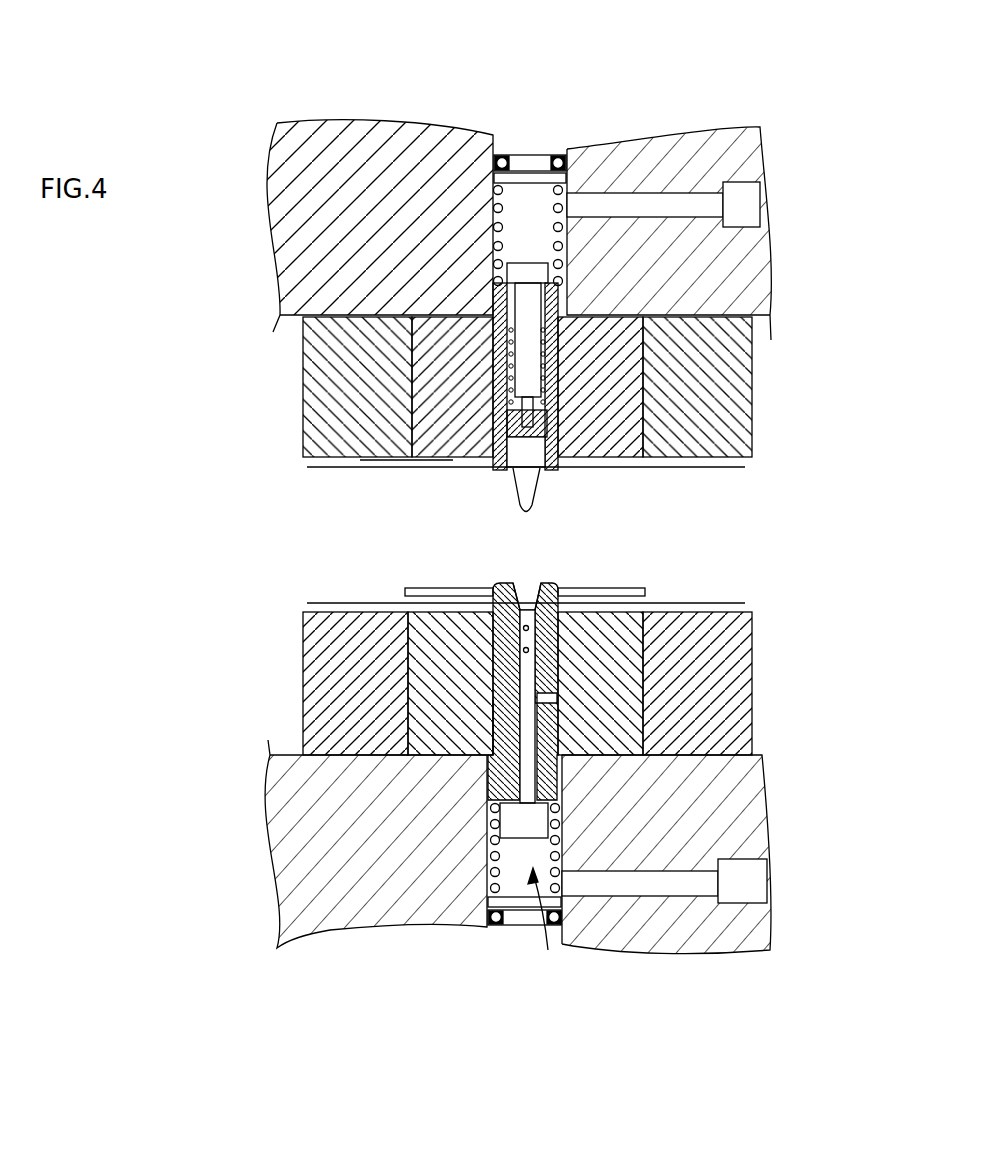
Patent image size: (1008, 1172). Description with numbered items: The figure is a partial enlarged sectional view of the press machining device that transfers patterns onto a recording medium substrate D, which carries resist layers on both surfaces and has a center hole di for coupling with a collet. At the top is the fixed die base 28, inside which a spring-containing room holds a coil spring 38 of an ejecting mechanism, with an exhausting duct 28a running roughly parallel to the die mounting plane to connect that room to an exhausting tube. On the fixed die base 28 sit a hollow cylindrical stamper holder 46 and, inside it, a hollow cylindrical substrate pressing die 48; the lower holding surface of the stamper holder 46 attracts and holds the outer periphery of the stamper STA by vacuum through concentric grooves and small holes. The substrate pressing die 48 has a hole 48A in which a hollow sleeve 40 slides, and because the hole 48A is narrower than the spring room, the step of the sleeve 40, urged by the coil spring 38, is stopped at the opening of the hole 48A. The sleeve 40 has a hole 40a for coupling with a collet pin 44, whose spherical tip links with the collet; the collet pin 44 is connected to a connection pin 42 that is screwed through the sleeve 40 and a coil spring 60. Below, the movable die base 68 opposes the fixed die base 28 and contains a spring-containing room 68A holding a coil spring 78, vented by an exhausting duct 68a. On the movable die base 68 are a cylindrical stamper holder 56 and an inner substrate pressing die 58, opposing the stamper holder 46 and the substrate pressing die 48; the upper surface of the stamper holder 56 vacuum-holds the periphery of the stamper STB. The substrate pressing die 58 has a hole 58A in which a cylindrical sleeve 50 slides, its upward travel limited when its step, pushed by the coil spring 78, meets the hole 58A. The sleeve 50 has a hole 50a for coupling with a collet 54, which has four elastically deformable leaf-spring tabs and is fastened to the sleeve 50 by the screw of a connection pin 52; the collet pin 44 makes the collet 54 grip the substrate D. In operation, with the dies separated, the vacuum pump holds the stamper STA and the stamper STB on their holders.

The fixed die base 28 is at (770, 262).
The exhausting duct 28a is at (667, 205).
The coil spring 38 is at (497, 158).
The connection pin 42 is at (532, 262).
The sleeve 40 is at (490, 295).
The hole 40a is at (557, 468).
The collet pin 44 is at (521, 462).
The stamper holder 46 is at (752, 378).
The substrate pressing die 48 is at (620, 460).
The hole 48A is at (440, 462).
The coil spring 60 is at (493, 392).
The stamper STA is at (700, 467).
The stamper STB is at (730, 605).
The recording medium substrate D is at (615, 590).
The hole di is at (568, 588).
The sleeve 50 is at (483, 790).
The hole 50a is at (640, 606).
The collet 54 is at (497, 584).
The stamper holder 56 is at (752, 663).
The substrate pressing die 58 is at (430, 663).
The hole 58A is at (490, 712).
The movable die base 68 is at (740, 818).
The exhausting duct 68a is at (650, 888).
The spring-containing room 68A is at (548, 950).
The connection pin 52 is at (503, 826).
The coil spring 78 is at (524, 907).